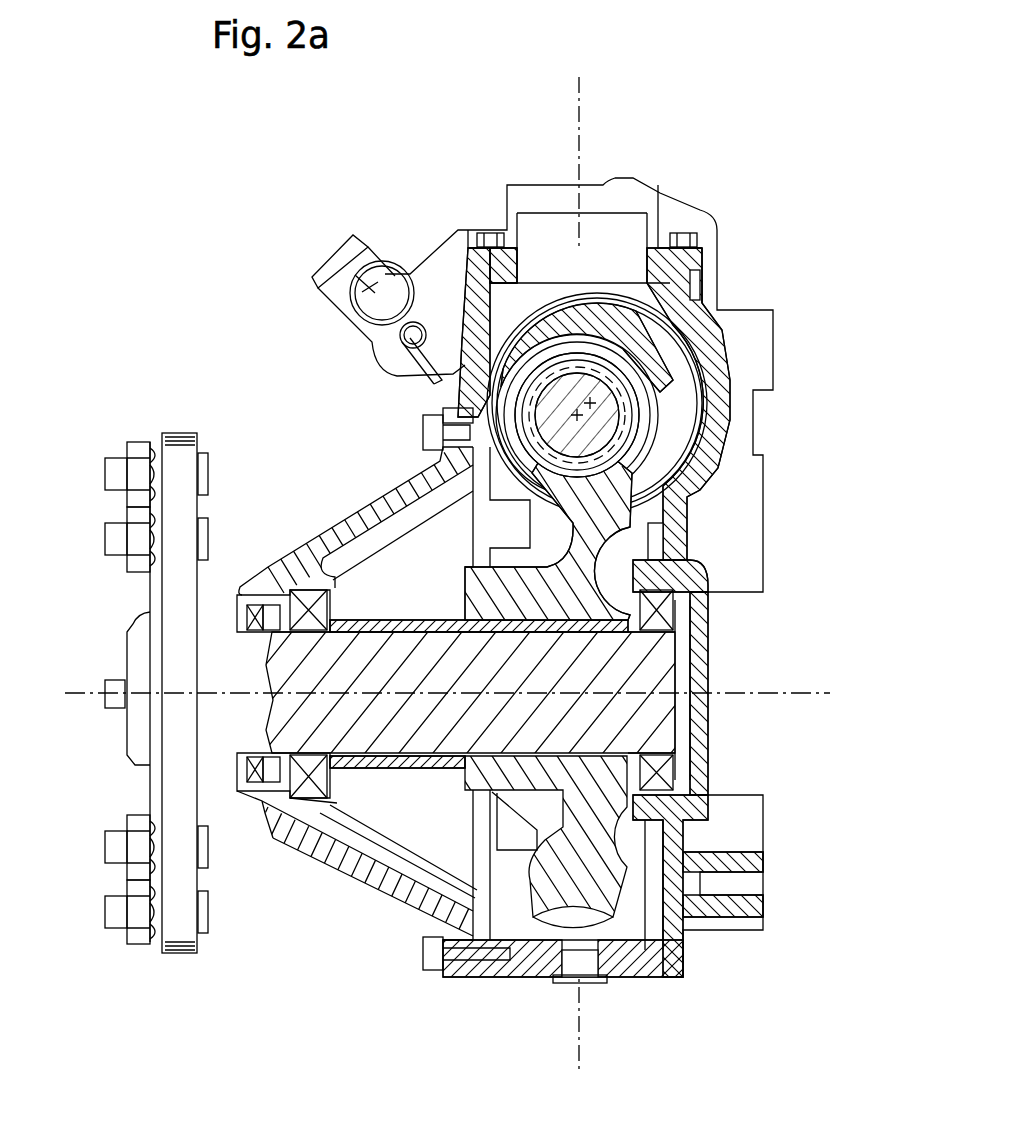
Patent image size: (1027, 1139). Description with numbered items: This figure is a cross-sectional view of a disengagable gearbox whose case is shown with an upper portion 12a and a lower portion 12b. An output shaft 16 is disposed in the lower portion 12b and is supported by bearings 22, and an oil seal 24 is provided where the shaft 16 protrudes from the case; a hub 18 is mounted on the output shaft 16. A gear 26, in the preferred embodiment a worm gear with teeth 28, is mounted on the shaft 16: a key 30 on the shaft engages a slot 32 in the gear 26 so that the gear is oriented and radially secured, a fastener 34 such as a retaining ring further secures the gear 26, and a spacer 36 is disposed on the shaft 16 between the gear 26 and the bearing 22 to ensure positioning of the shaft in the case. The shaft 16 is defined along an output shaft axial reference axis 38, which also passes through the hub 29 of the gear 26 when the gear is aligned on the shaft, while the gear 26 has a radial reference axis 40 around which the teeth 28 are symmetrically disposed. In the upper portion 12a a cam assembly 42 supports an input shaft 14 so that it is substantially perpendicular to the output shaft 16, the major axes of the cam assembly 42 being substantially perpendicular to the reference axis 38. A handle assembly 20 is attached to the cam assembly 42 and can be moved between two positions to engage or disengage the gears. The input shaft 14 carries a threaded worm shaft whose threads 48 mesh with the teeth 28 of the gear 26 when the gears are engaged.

The upper portion 12a is at (722, 352).
The lower portion 12b is at (688, 953).
The input shaft 14 is at (612, 432).
The output shaft 16 is at (665, 652).
The hub 18 is at (175, 593).
The handle assembly 20 is at (300, 264).
The bearings 22 is at (665, 770).
The oil seal 24 is at (245, 760).
The gear 26 is at (600, 928).
The teeth 28 is at (548, 932).
The hub 29 is at (480, 773).
The key 30 is at (598, 668).
The slot 32 is at (487, 635).
The fastener 34 is at (627, 723).
The spacer 36 is at (406, 770).
The output shaft axial reference axis 38 is at (92, 696).
The radial reference axis 40 is at (583, 110).
The cam assembly 42 is at (650, 345).
The threads 48 is at (635, 412).